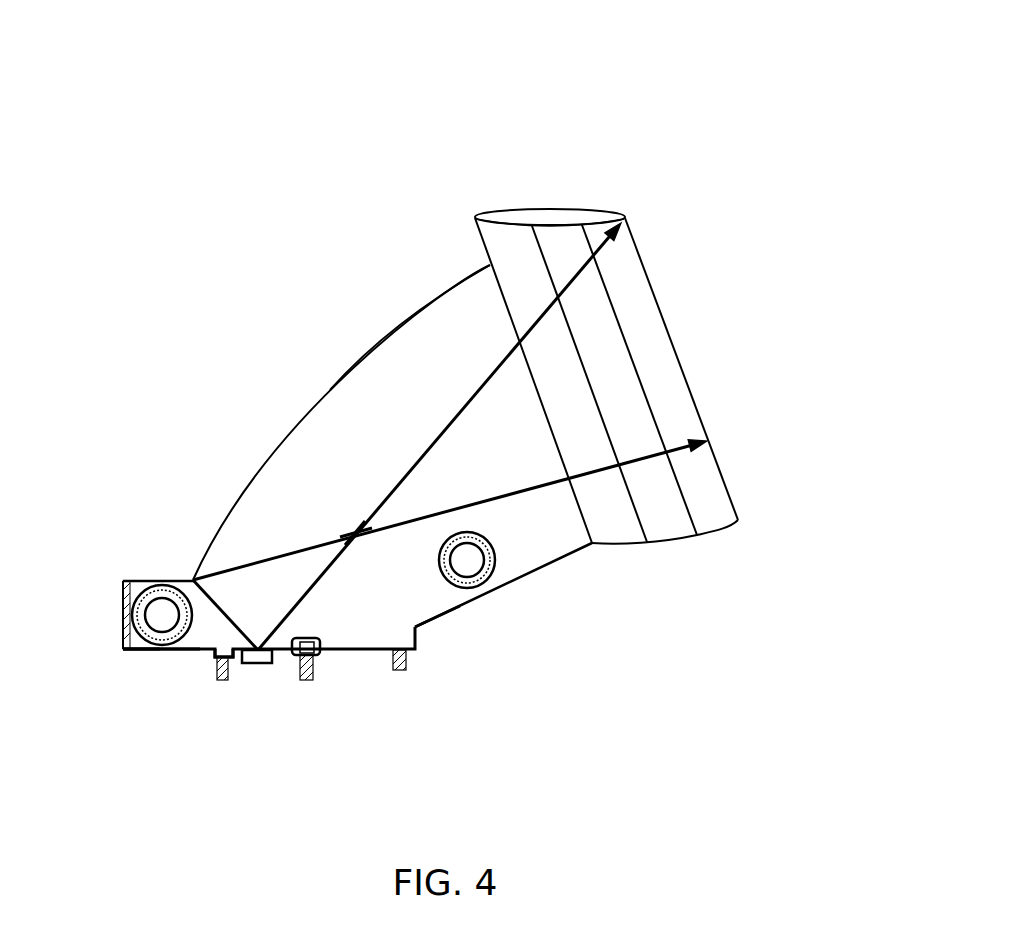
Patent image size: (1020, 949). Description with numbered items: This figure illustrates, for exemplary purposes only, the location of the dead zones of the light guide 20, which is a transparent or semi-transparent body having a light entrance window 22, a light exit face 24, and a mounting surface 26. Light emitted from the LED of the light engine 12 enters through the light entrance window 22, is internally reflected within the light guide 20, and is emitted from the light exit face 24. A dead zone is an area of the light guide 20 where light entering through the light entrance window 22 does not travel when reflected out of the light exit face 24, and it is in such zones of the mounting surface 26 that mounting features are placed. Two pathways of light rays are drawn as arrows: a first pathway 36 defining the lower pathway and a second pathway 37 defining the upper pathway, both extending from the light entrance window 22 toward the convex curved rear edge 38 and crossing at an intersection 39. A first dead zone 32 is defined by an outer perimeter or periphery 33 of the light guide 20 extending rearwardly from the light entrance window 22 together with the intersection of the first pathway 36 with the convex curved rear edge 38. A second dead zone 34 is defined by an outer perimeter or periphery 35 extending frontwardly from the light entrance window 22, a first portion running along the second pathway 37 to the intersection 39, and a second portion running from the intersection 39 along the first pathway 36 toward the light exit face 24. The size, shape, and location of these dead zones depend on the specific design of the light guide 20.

The light guide 20 is at (437, 34).
The light entrance window 22 is at (353, 657).
The light exit face 24 is at (680, 345).
The mounting surface 26 is at (317, 463).
The light engine 12 is at (258, 663).
The first dead zone 32 is at (197, 640).
The outer perimeter or periphery 33 is at (140, 651).
The second dead zone 34 is at (429, 594).
The outer perimeter or periphery 35 is at (563, 553).
The first pathway 36 is at (238, 625).
The second pathway 37 is at (450, 418).
The convex curved rear edge 38 is at (367, 360).
The intersection 39 is at (355, 533).